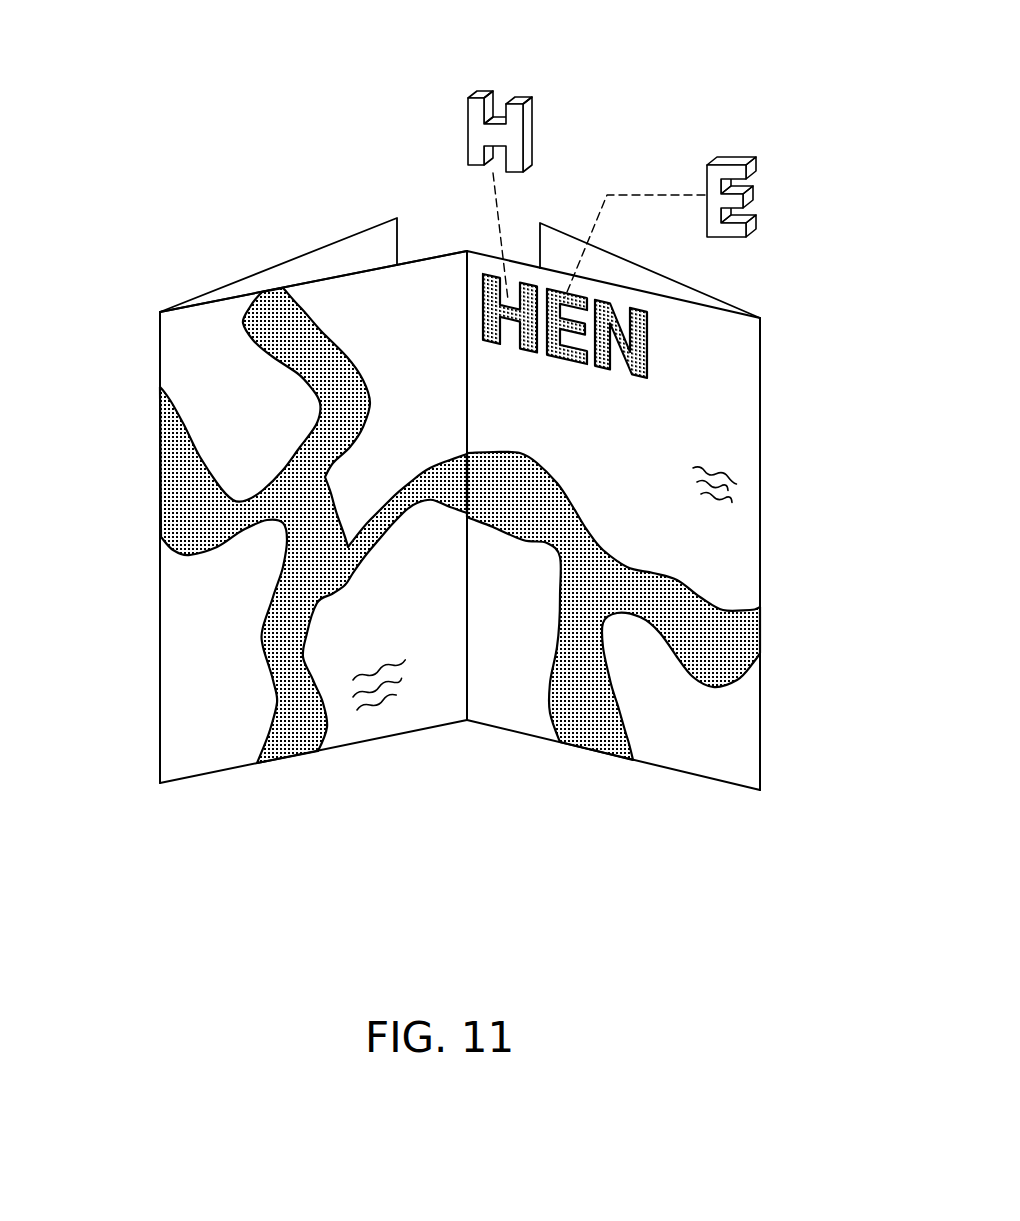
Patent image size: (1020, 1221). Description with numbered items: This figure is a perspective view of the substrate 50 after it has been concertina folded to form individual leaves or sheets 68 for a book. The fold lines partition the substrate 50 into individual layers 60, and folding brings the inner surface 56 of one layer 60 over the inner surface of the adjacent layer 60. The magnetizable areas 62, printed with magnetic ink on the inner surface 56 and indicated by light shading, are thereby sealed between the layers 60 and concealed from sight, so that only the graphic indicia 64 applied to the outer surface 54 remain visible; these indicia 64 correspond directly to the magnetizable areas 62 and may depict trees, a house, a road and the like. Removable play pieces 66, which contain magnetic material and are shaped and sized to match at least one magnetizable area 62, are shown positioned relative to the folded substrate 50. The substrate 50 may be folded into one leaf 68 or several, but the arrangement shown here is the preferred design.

The substrate 50 is at (474, 510).
The outer surface 54 is at (733, 392).
The inner surface 56 is at (367, 247).
The layer 60 is at (275, 258).
The magnetizable area 62 is at (183, 493).
The graphic indicia 64 is at (718, 488).
The removable play piece 66 is at (489, 92).
The leaf 68 is at (161, 705).